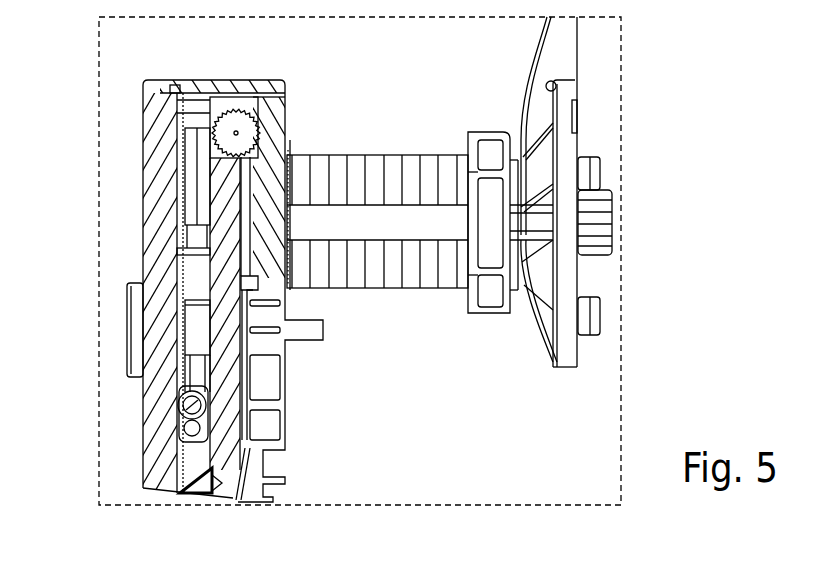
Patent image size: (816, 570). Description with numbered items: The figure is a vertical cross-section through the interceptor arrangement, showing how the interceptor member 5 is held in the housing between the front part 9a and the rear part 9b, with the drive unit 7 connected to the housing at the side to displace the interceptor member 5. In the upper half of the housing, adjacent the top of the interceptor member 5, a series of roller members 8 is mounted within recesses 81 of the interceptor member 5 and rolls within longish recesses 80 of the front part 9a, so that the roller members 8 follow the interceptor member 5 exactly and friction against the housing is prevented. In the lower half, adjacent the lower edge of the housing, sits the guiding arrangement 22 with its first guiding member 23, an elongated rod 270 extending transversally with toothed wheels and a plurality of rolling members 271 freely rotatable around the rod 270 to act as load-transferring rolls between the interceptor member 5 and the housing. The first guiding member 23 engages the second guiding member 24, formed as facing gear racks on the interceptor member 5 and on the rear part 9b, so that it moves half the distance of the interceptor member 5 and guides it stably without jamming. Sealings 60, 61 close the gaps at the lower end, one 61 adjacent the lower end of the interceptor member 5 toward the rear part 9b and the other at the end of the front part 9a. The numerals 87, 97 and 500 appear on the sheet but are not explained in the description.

The interceptor member 5 is at (212, 258).
The drive unit 7 is at (408, 133).
The roller members 8 is at (243, 122).
The front part 9a is at (272, 138).
The rear part 9b is at (153, 173).
The guiding arrangement 22 is at (138, 452).
The first guiding member 23 is at (238, 432).
The second guiding member 24 is at (162, 500).
The sealing 60 is at (241, 490).
The sealing 61 is at (197, 488).
The longish recesses 80 is at (287, 154).
The recesses 81 is at (200, 138).
The element 87 is at (381, 569).
The element 97 is at (466, 569).
The rod 270 is at (213, 418).
The rolling members 271 is at (178, 396).
The assembly 500 is at (610, 569).